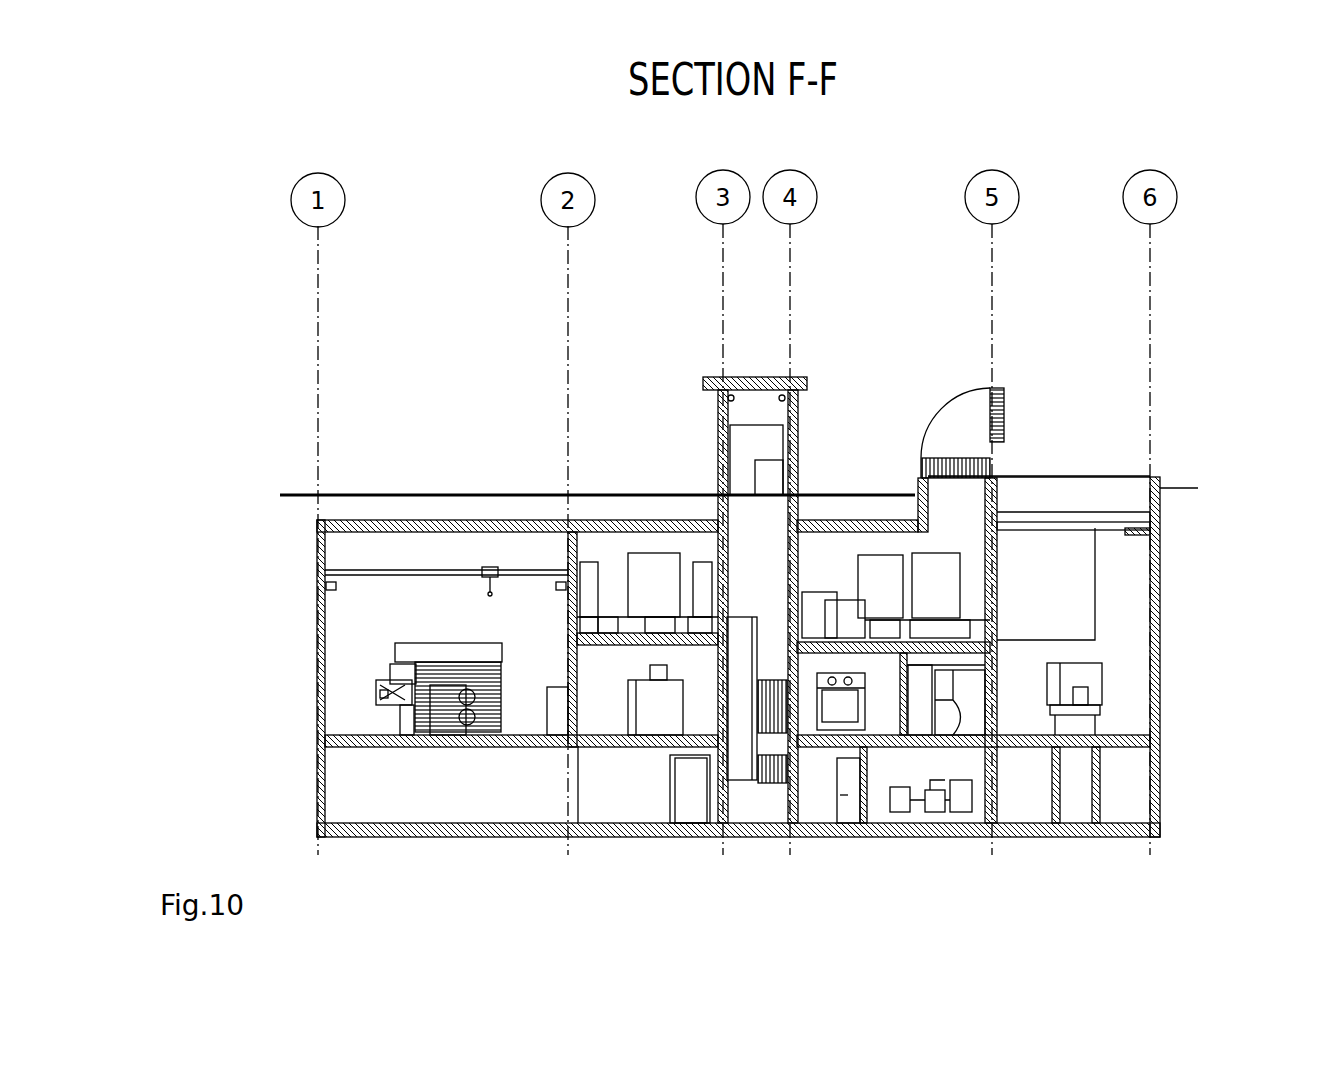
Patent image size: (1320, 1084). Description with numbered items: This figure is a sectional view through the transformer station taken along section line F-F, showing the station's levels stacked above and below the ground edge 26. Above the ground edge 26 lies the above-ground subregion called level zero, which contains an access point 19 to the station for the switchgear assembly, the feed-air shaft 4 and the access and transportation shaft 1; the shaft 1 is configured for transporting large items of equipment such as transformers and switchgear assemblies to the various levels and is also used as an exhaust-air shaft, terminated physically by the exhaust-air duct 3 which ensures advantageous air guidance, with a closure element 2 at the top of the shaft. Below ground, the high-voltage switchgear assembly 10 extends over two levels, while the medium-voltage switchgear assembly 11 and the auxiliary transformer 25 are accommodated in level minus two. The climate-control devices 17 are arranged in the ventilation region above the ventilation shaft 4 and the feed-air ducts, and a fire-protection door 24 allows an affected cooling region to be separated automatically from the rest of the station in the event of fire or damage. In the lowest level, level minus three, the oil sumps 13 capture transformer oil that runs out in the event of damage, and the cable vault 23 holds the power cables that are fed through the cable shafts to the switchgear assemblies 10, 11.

The access and transportation shaft 1 is at (1097, 490).
The closure element 2 is at (1052, 475).
The exhaust-air duct 3 is at (1004, 416).
The feed-air shaft 4 is at (745, 523).
The high-voltage switchgear assembly 10 is at (395, 672).
The medium-voltage switchgear assembly 11 is at (650, 740).
The oil sumps 13 is at (1118, 790).
The climate-control devices 17 is at (938, 592).
The access point 19 is at (773, 472).
The cable vault 23 is at (370, 782).
The fire-protection door 24 is at (1068, 552).
The auxiliary transformer 25 is at (838, 700).
The ground edge 26 is at (297, 492).